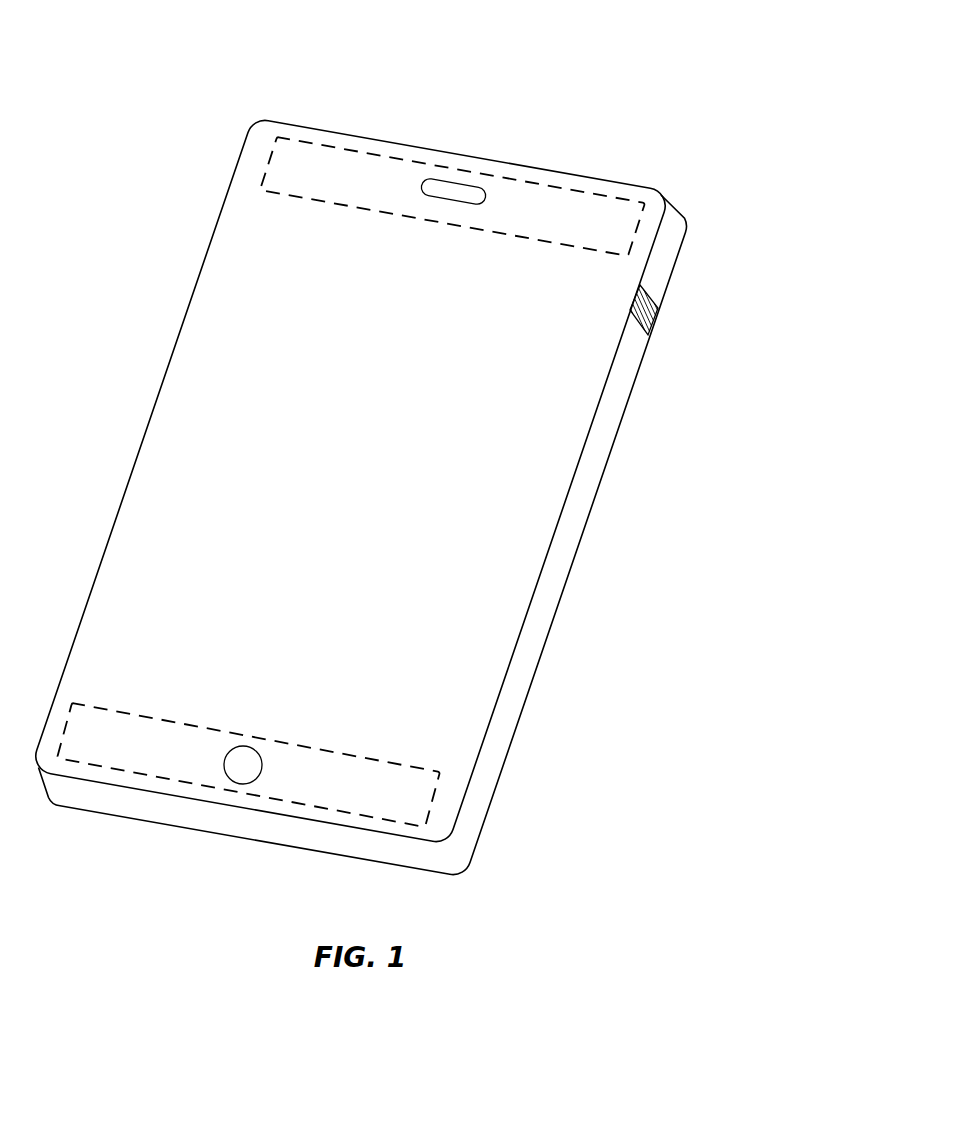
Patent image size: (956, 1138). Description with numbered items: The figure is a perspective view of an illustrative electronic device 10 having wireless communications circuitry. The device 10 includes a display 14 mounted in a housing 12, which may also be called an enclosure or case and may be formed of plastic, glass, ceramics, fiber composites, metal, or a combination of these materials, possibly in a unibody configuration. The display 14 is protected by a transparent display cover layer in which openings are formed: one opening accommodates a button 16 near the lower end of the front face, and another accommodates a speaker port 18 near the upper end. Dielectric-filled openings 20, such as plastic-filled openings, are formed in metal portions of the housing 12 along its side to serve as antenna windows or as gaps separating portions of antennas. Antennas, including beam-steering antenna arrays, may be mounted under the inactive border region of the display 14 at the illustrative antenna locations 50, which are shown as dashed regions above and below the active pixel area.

The electronic device 10 is at (712, 68).
The housing 12 is at (601, 445).
The display 14 is at (165, 493).
The button 16 is at (243, 784).
The speaker port 18 is at (458, 181).
The dielectric-filled openings 20 is at (650, 317).
The antenna locations 50 is at (580, 191).